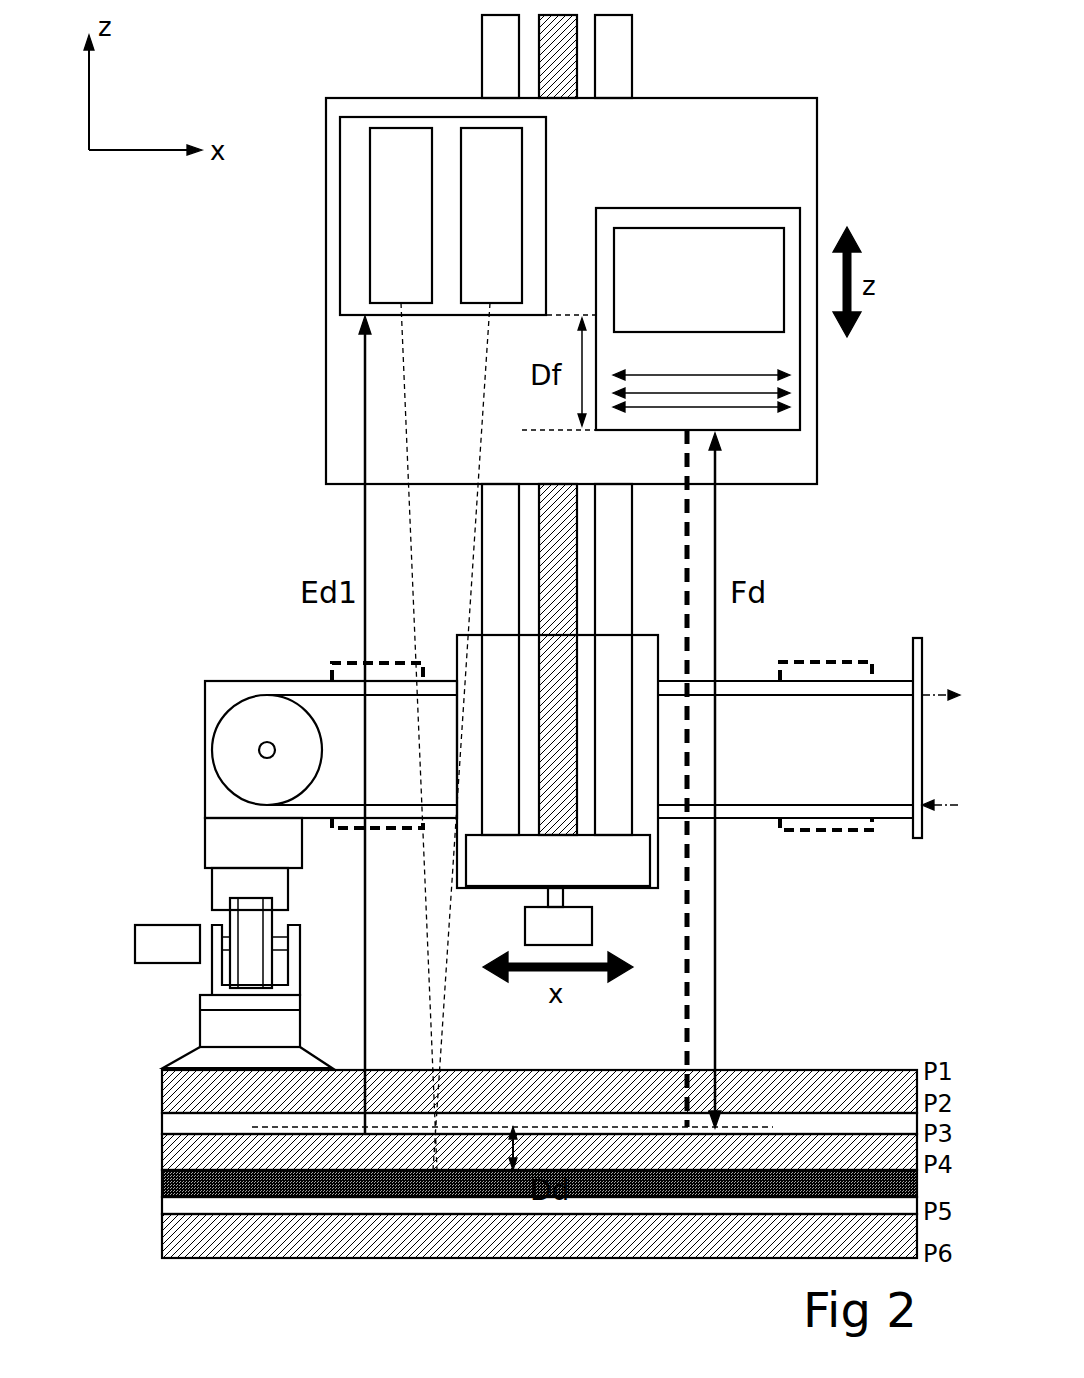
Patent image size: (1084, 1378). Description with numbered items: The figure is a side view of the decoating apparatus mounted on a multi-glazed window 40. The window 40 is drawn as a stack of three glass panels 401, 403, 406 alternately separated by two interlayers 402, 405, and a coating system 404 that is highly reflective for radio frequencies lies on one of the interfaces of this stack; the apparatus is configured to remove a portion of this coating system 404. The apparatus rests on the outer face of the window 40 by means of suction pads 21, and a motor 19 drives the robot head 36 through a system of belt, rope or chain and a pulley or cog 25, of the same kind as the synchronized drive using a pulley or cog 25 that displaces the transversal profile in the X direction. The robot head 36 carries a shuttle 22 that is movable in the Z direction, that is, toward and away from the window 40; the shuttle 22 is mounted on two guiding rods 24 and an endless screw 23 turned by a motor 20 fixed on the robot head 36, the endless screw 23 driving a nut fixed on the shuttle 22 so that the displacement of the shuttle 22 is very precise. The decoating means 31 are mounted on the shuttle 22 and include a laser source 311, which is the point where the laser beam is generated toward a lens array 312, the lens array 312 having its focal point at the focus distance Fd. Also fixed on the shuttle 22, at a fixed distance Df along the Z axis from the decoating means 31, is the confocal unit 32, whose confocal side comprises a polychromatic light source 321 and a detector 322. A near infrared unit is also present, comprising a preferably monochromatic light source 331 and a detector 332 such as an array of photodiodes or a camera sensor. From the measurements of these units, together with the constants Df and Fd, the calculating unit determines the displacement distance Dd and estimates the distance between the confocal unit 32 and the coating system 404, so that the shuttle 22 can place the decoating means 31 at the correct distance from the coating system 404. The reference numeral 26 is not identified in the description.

The motor 19 is at (185, 943).
The motor 20 is at (565, 938).
The suction pad 21 is at (313, 1060).
The shuttle 22 is at (794, 98).
The endless screw 23 is at (617, 22).
The guiding rod 24 is at (540, 22).
The pulley or cog 25 is at (275, 715).
The belt 26 is at (327, 693).
The decoating means 31 is at (800, 222).
The confocal unit 32 is at (350, 118).
The robot head 36 is at (650, 757).
The multi-glazed window 40 is at (478, 1163).
The laser source 311 is at (715, 287).
The lens array 312 is at (785, 405).
The polychromatic light source 321 is at (397, 268).
The detector 322 is at (500, 233).
The light source 331 is at (390, 838).
The detector 332 is at (840, 820).
The glass panel 401 is at (195, 1086).
The interlayer 402 is at (195, 1126).
The glass panel 403 is at (195, 1157).
The coating system 404 is at (195, 1188).
The interlayer 405 is at (195, 1210).
The glass panel 406 is at (514, 1236).